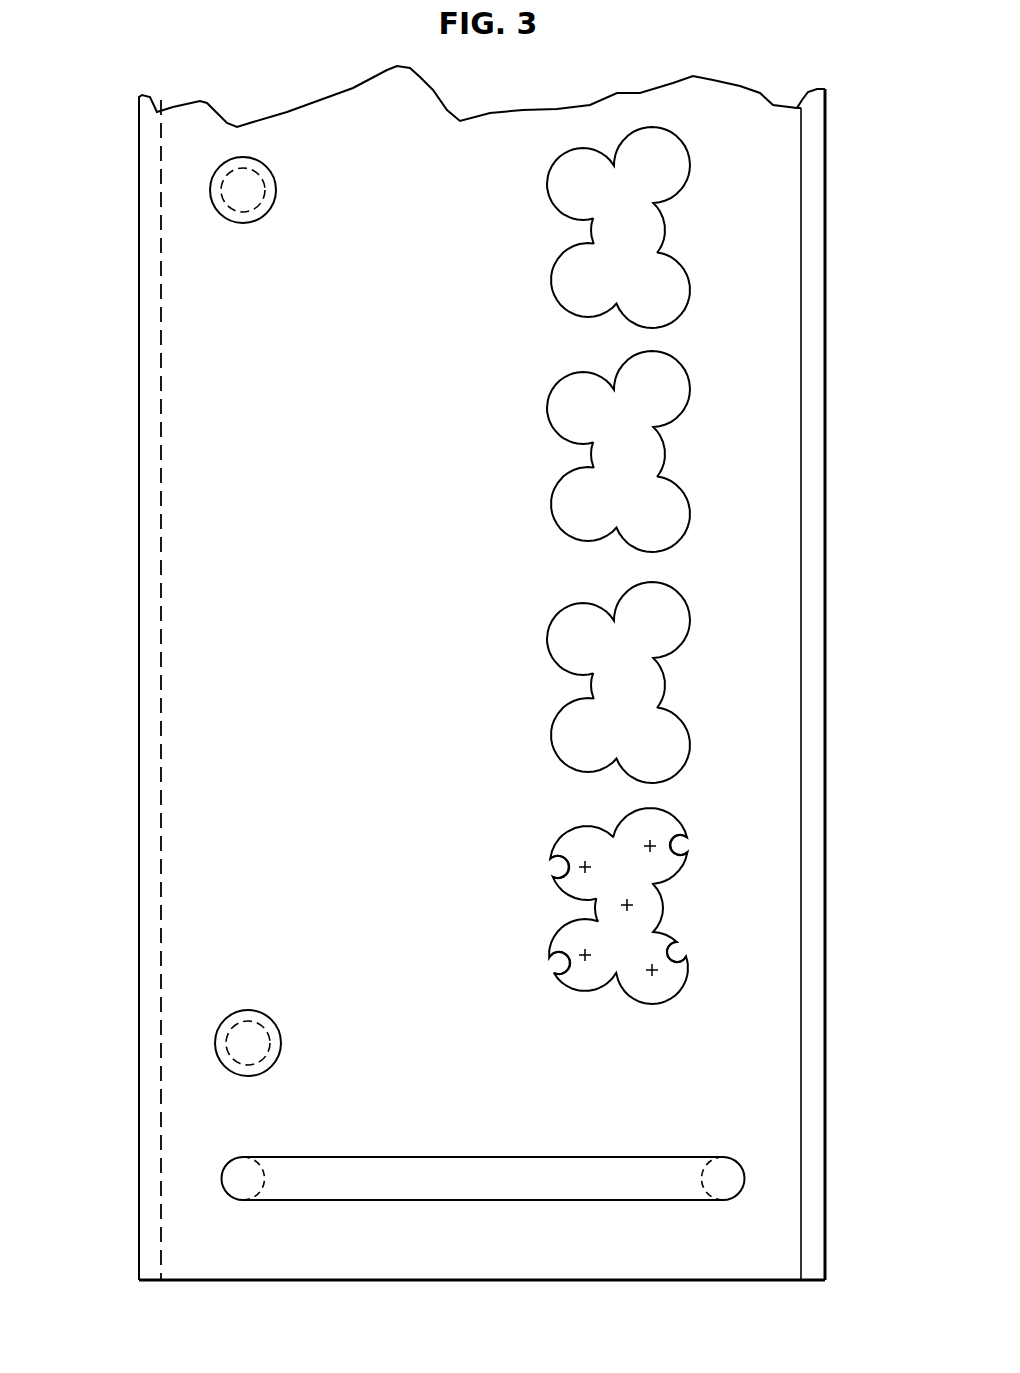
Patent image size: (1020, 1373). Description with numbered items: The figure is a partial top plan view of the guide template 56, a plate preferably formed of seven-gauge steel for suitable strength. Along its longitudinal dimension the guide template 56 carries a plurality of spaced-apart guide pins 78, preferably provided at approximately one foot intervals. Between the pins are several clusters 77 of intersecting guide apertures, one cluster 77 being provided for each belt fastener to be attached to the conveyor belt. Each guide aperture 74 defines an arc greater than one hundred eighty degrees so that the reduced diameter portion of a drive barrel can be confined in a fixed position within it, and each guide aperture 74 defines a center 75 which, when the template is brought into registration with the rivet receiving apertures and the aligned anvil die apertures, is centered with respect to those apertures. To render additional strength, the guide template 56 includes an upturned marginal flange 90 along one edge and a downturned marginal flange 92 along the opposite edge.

The guide template 56 is at (262, 647).
The guide aperture 74 is at (560, 858).
The center 75 is at (581, 862).
The cluster of guide apertures 77 is at (565, 458).
The guide pin 78 is at (211, 197).
The upturned marginal flange 90 is at (823, 993).
The downturned marginal flange 92 is at (148, 1100).